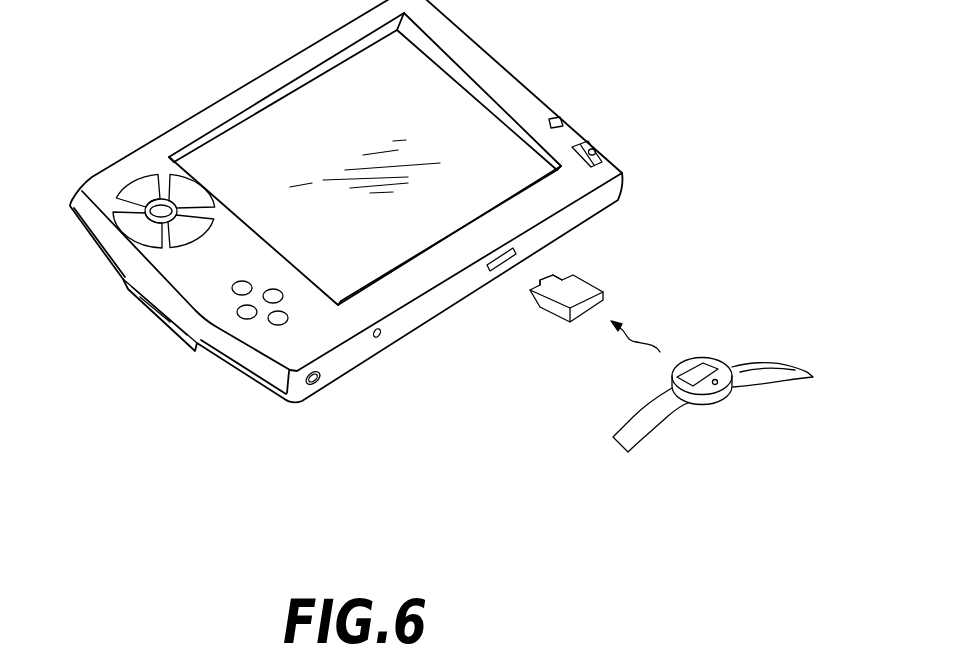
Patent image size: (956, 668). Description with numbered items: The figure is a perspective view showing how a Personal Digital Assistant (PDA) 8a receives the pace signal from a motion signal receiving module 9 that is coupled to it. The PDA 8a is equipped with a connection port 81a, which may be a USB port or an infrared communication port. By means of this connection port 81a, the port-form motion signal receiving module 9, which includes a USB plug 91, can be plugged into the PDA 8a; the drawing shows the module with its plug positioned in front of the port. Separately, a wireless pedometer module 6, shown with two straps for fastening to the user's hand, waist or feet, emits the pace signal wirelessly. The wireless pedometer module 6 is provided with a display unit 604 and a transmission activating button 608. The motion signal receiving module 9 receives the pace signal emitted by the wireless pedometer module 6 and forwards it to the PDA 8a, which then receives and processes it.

The Personal Digital Assistant (PDA) 8a is at (147, 160).
The connection port 81a is at (514, 254).
The motion signal receiving module 9 is at (604, 287).
The USB plug 91 is at (531, 290).
The wireless pedometer module 6 is at (725, 377).
The display unit 604 is at (700, 364).
The transmission activating button 608 is at (718, 384).